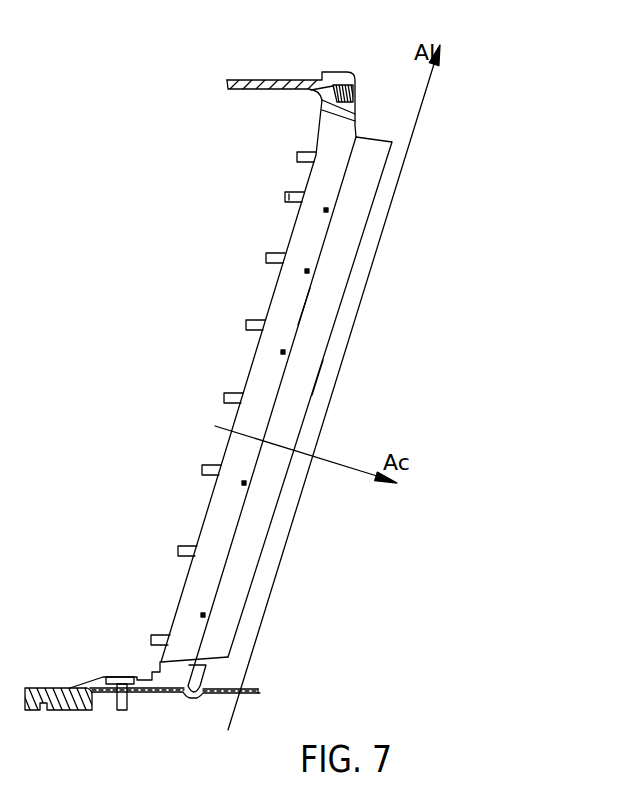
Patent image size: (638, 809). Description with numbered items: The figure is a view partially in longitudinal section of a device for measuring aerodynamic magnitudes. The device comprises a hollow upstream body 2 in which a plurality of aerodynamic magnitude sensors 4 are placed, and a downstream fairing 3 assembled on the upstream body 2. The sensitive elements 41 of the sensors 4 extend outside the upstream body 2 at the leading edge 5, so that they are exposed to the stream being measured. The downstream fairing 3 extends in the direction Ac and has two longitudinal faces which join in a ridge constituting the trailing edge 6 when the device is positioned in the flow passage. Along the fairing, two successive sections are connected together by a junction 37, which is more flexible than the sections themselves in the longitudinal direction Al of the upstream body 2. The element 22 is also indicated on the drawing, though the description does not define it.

The upstream body 2 is at (202, 530).
The frame inner wall 22 is at (195, 435).
The downstream fairing 3 is at (0, 72).
The junction 37 is at (303, 307).
The aerodynamic magnitude sensors 4 is at (242, 236).
The sensitive elements 41 is at (288, 198).
The leading edge 5 is at (205, 355).
The trailing edge 6 is at (338, 383).